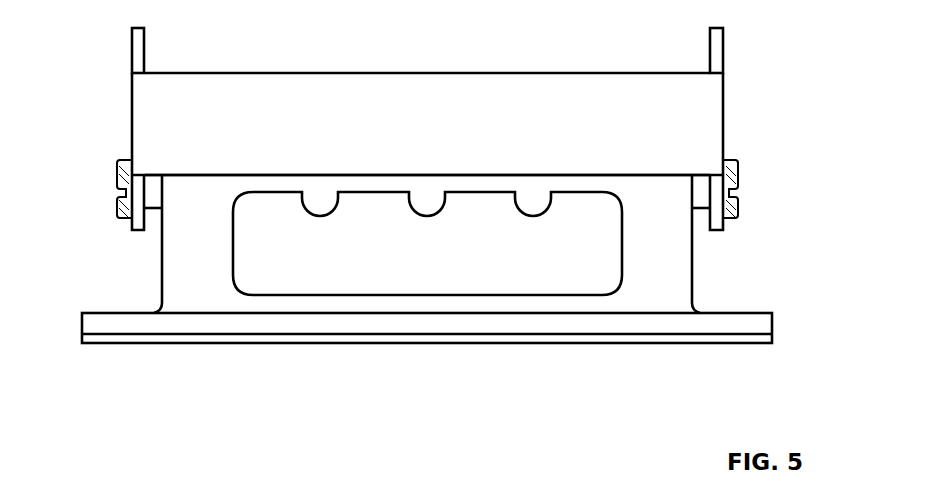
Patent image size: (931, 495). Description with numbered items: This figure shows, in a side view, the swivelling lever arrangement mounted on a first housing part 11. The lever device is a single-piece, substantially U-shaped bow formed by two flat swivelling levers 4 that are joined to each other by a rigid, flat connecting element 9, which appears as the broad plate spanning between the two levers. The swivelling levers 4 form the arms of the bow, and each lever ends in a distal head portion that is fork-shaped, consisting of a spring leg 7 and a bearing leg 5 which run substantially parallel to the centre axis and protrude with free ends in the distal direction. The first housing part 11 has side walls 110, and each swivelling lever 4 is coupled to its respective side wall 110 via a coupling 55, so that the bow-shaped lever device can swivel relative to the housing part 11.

The swivelling lever 4 is at (430, 160).
The bearing leg 5 is at (130, 158).
The spring leg 7 is at (134, 38).
The connecting element 9 is at (466, 115).
The first housing part 11 is at (391, 321).
The coupling 55 is at (116, 200).
The side wall 110 is at (167, 268).